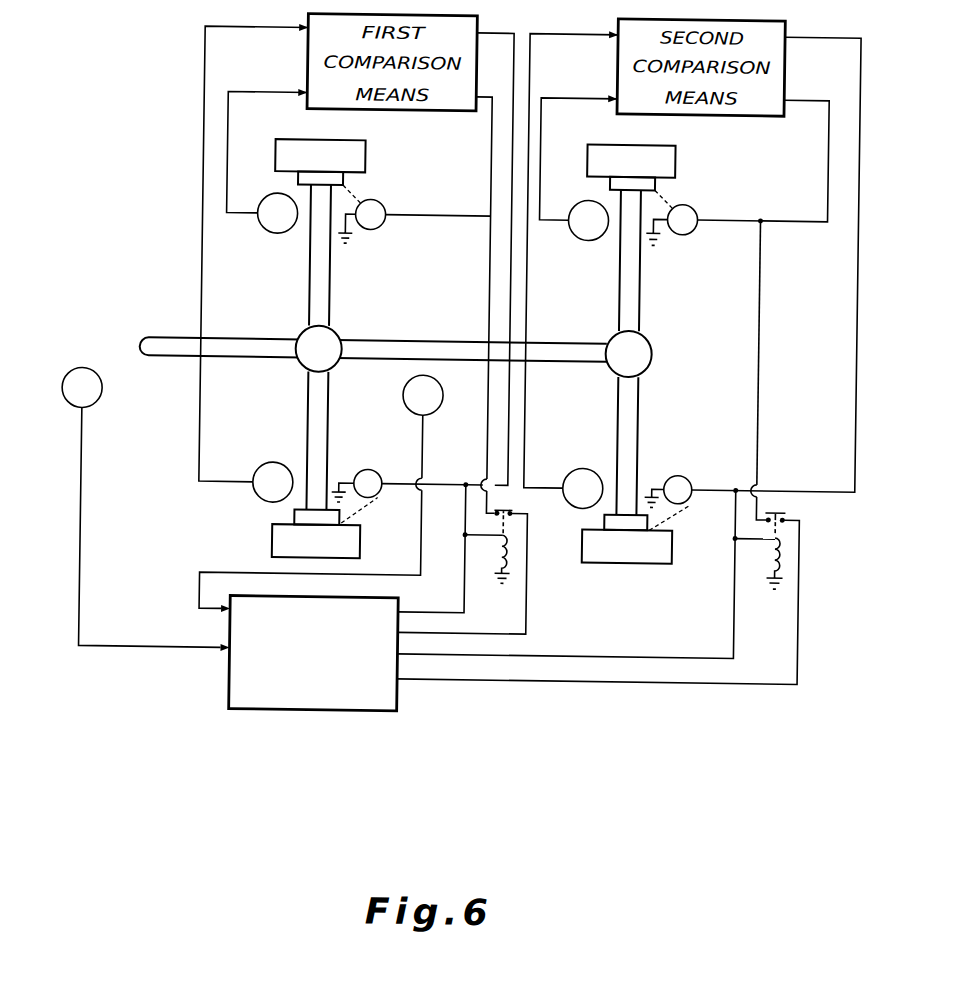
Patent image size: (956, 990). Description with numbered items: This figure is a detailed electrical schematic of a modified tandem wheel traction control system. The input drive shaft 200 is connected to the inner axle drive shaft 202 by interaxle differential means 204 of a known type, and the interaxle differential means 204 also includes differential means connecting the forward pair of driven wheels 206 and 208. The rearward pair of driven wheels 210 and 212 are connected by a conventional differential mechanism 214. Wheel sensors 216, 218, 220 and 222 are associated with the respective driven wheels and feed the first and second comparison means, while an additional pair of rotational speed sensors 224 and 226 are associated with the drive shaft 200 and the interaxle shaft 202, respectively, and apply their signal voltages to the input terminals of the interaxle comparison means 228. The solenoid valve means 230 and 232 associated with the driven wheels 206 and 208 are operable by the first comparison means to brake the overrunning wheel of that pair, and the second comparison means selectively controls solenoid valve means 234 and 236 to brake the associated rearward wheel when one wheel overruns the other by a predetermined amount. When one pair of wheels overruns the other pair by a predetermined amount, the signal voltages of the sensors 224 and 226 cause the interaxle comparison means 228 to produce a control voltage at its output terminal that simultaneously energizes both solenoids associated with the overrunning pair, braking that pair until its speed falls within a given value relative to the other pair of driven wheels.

The input drive shaft 200 is at (264, 355).
The inner axle drive shaft 202 is at (441, 352).
The interaxle differential means 204 is at (332, 344).
The driven wheel 206 is at (275, 544).
The driven wheel 208 is at (361, 162).
The driven wheel 210 is at (675, 545).
The driven wheel 212 is at (669, 157).
The differential mechanism 214 is at (644, 350).
The wheel sensor 216 is at (273, 463).
The wheel sensor 218 is at (266, 221).
The wheel sensor 220 is at (581, 466).
The wheel sensor 222 is at (580, 239).
The rotational speed sensor 224 is at (100, 405).
The rotational speed sensor 226 is at (407, 406).
The interaxle comparison means 228 is at (314, 713).
The solenoid valve means 230 is at (378, 472).
The solenoid valve means 232 is at (376, 208).
The solenoid valve means 234 is at (681, 471).
The solenoid valve means 236 is at (694, 209).